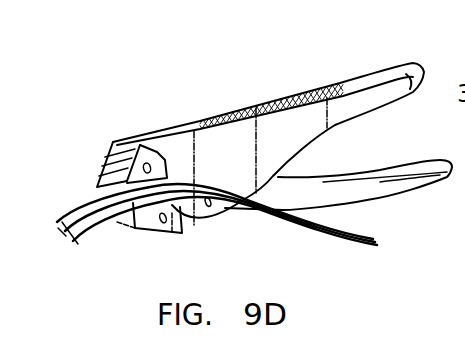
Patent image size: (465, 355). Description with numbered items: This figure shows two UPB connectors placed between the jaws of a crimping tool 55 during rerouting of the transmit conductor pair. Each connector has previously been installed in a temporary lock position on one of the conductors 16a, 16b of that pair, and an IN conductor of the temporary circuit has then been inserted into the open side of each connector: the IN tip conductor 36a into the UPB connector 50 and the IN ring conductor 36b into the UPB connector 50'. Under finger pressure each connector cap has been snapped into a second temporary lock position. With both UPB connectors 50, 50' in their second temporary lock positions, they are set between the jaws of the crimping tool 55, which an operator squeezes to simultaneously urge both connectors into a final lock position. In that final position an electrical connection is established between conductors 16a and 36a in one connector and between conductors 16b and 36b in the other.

The crimping tool 55 is at (363, 76).
The UPB connector 50 is at (114, 155).
The UPB connector 50' is at (181, 232).
The conductor 16a is at (82, 229).
The conductor 16b is at (73, 213).
The IN tip conductor 36a is at (80, 239).
The IN ring conductor 36b is at (64, 236).